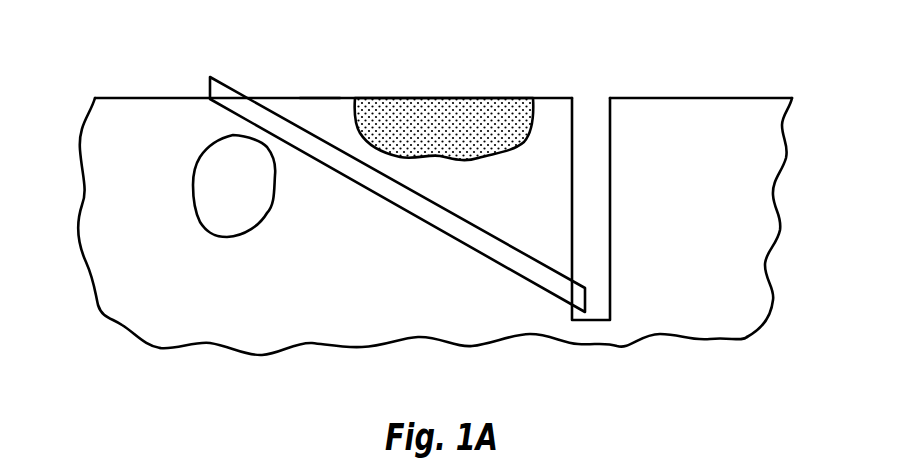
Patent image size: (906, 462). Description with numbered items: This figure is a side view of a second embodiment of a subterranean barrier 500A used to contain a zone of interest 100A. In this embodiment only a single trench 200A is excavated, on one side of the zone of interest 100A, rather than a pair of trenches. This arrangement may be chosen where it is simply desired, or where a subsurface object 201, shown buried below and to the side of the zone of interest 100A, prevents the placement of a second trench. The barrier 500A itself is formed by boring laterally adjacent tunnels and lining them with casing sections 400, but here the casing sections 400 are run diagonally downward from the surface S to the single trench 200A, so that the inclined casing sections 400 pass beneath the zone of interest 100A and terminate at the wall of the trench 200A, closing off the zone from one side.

The surface S is at (312, 98).
The zone of interest 100A is at (473, 113).
The trench 200A is at (588, 112).
The subsurface object 201 is at (217, 187).
The casing sections 400 is at (490, 245).
The barrier 500A is at (378, 222).